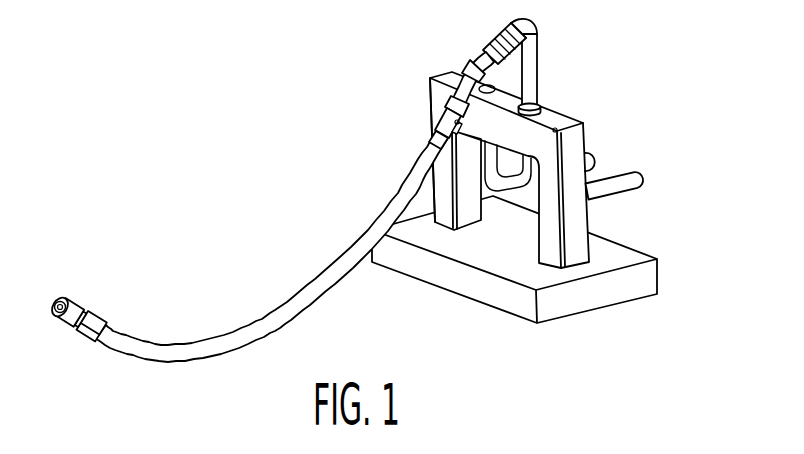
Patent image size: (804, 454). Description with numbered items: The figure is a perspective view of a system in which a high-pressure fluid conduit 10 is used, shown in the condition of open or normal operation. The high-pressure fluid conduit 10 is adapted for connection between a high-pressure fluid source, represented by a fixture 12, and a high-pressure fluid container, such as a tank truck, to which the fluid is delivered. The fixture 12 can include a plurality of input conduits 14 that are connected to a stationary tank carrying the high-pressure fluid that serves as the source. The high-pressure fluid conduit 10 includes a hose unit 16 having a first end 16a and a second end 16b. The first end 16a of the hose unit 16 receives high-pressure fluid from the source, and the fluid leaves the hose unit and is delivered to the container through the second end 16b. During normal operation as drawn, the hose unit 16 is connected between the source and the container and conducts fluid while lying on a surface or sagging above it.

The high-pressure fluid conduit 10 is at (376, 217).
The fixture 12 is at (450, 303).
The input conduits 14 is at (596, 153).
The hose unit 16 is at (271, 233).
The first end 16a is at (432, 98).
The second end 16b is at (82, 310).